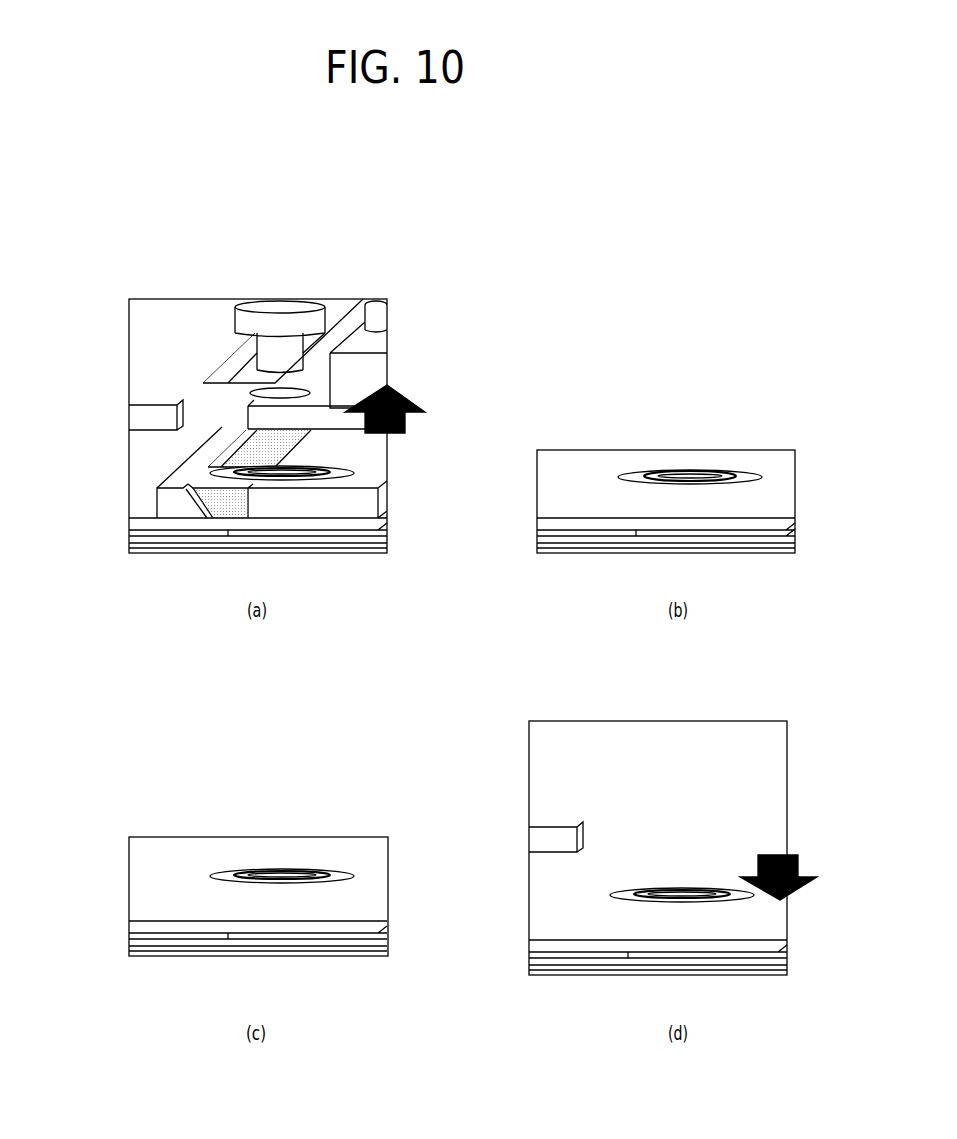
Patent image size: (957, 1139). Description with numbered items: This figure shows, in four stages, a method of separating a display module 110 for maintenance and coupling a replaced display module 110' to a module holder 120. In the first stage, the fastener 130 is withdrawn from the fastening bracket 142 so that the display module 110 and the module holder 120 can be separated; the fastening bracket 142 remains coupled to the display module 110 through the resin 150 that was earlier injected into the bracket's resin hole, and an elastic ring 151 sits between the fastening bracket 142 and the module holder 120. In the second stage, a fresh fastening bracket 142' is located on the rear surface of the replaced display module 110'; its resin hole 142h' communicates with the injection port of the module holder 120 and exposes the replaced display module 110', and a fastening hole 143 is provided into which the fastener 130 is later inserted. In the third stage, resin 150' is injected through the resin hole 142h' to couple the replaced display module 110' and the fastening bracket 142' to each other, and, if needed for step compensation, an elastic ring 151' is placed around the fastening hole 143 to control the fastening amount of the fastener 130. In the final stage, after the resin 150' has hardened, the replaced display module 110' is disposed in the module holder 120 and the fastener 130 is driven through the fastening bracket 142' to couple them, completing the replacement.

The fastener 130 is at (285, 313).
The module holder 120 is at (155, 416).
The resin 150 is at (186, 474).
The fastening bracket 142 is at (224, 472).
The display module 110 is at (224, 526).
The elastic ring 151 is at (320, 466).
The resin hole 142h' is at (629, 455).
The fastening hole 143 is at (708, 475).
The fastening bracket 142' is at (458, 683).
The display module 110' is at (494, 744).
The resin 150' is at (384, 886).
The elastic ring 151' is at (523, 891).